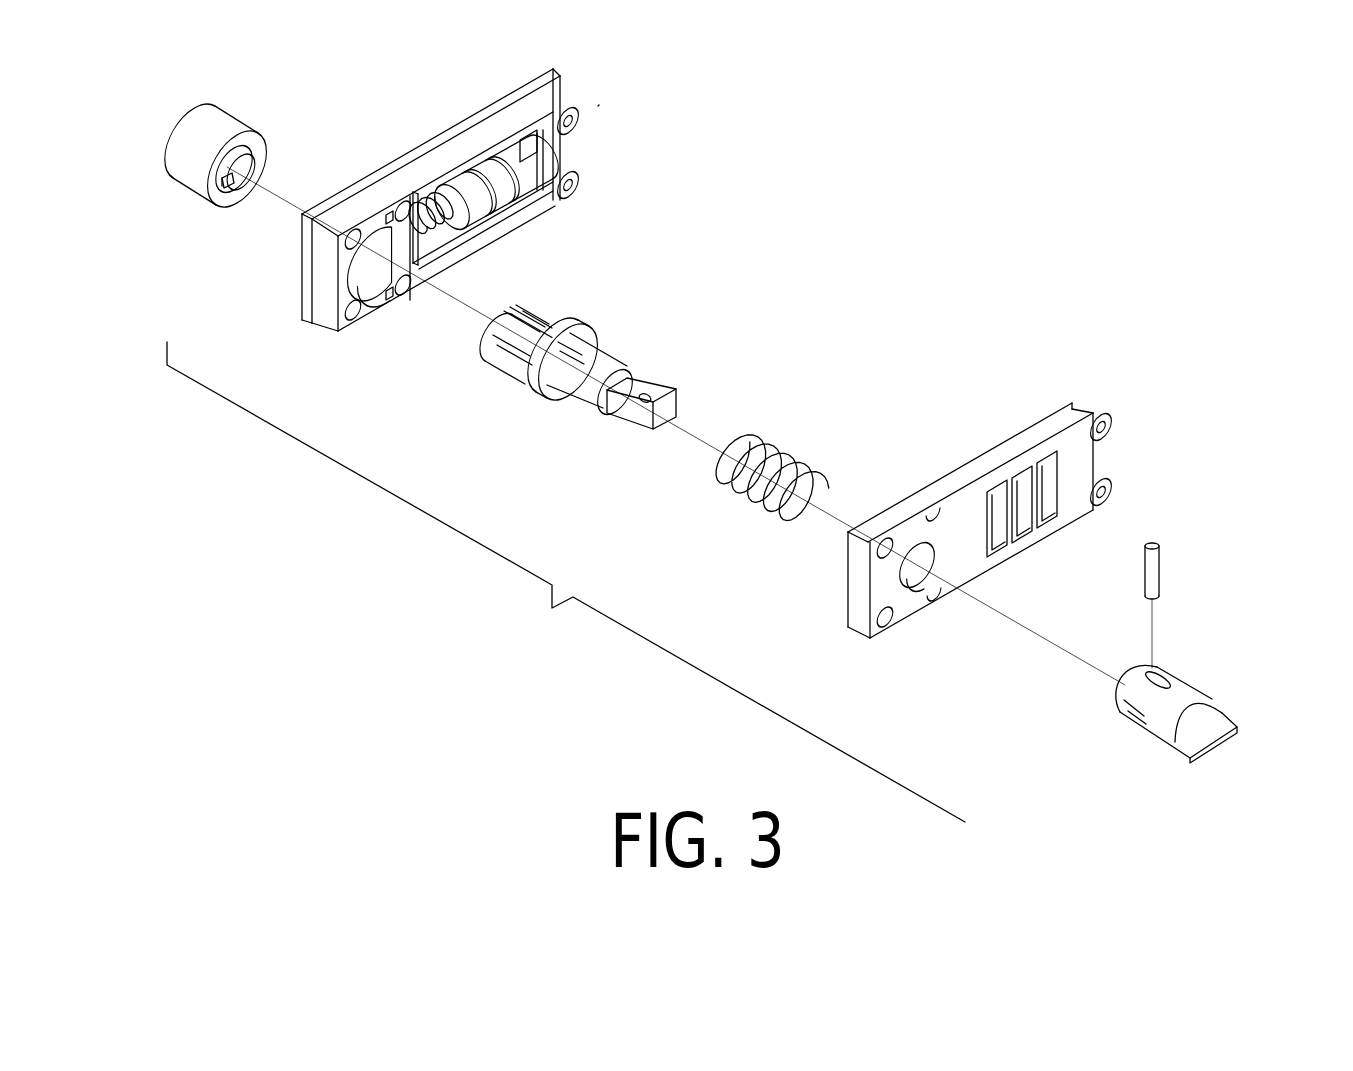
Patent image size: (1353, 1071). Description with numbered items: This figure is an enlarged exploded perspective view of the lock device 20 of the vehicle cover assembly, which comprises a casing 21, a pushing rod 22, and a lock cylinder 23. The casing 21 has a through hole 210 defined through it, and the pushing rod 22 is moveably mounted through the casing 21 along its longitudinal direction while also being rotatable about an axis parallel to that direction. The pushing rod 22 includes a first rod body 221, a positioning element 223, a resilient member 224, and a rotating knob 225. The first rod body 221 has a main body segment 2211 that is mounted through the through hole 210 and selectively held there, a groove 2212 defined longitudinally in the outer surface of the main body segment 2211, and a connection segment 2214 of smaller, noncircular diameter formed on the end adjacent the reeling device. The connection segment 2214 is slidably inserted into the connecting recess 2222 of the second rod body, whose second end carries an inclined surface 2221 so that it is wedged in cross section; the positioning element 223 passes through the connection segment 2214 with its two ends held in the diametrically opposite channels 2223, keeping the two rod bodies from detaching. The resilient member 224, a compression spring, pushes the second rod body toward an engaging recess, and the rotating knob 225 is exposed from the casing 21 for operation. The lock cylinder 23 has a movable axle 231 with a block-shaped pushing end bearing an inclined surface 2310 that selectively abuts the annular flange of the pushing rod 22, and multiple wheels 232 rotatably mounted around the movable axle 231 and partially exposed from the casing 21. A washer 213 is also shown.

The lock device 20 is at (598, 106).
The casing 21 is at (323, 316).
The through hole 210 is at (376, 286).
The washer 213 is at (540, 383).
The pushing rod 22 is at (662, 353).
The first rod body 221 is at (588, 323).
The main body segment 2211 is at (508, 350).
The groove 2212 is at (530, 304).
The connection segment 2214 is at (638, 420).
The positioning element 223 is at (1158, 568).
The resilient member 224 is at (791, 452).
The rotating knob 225 is at (190, 186).
The lock cylinder 23 is at (512, 199).
The movable axle 231 is at (446, 222).
The wheels 232 is at (532, 178).
The inclined surface 2310 is at (421, 262).
The inclined surface 2221 is at (1220, 742).
The connecting recess 2222 is at (1130, 716).
The channel 2223 is at (1166, 687).